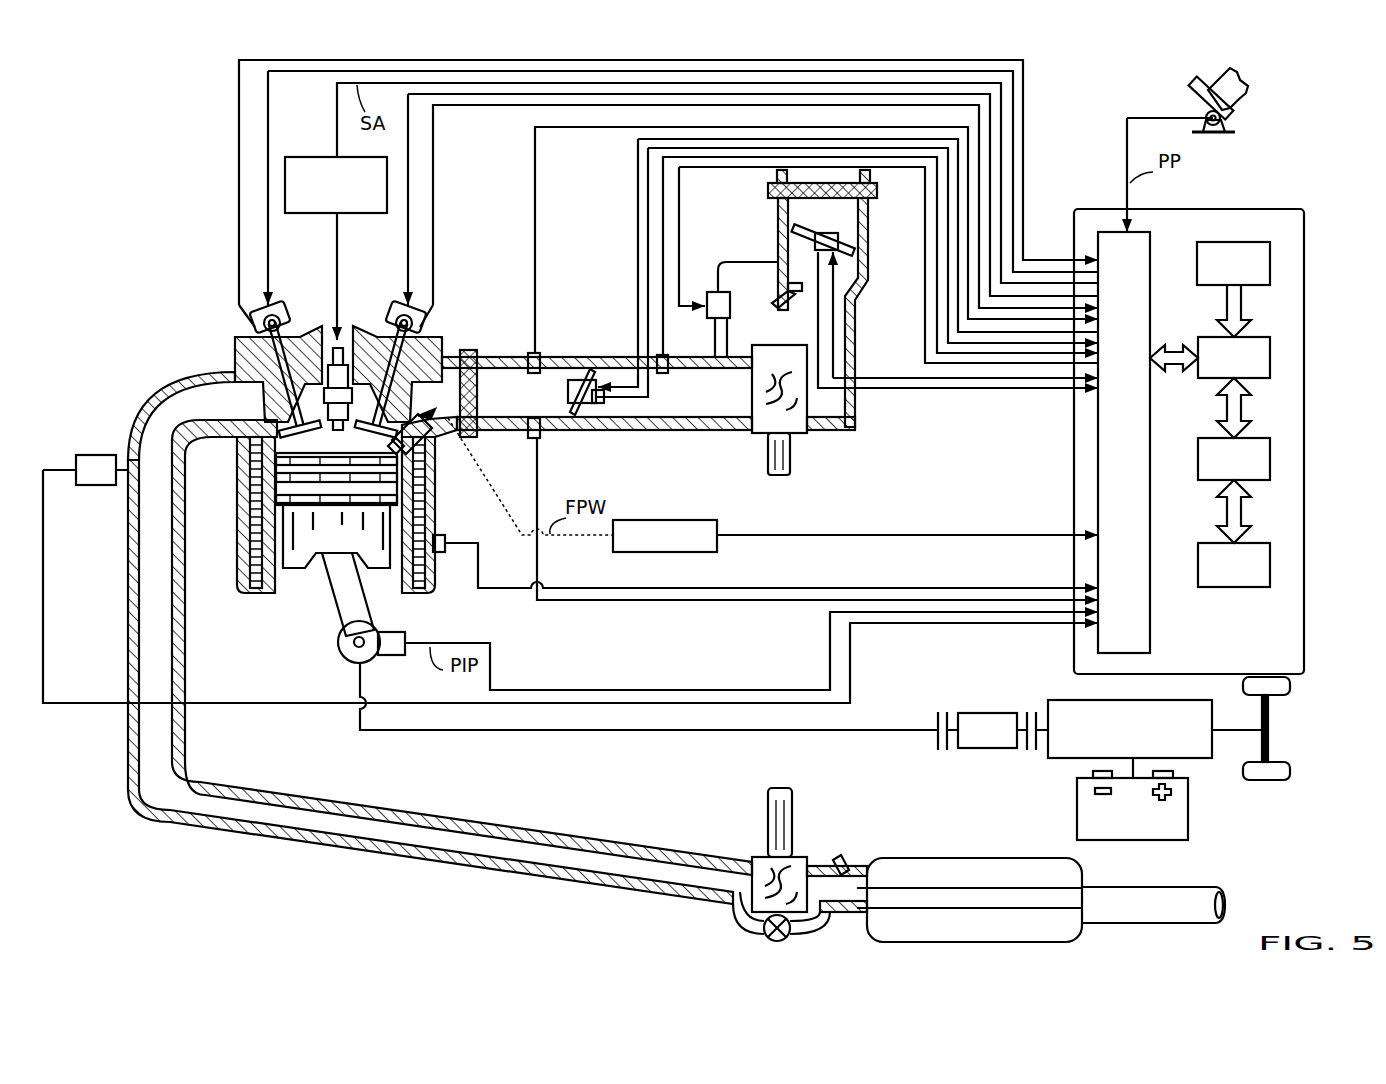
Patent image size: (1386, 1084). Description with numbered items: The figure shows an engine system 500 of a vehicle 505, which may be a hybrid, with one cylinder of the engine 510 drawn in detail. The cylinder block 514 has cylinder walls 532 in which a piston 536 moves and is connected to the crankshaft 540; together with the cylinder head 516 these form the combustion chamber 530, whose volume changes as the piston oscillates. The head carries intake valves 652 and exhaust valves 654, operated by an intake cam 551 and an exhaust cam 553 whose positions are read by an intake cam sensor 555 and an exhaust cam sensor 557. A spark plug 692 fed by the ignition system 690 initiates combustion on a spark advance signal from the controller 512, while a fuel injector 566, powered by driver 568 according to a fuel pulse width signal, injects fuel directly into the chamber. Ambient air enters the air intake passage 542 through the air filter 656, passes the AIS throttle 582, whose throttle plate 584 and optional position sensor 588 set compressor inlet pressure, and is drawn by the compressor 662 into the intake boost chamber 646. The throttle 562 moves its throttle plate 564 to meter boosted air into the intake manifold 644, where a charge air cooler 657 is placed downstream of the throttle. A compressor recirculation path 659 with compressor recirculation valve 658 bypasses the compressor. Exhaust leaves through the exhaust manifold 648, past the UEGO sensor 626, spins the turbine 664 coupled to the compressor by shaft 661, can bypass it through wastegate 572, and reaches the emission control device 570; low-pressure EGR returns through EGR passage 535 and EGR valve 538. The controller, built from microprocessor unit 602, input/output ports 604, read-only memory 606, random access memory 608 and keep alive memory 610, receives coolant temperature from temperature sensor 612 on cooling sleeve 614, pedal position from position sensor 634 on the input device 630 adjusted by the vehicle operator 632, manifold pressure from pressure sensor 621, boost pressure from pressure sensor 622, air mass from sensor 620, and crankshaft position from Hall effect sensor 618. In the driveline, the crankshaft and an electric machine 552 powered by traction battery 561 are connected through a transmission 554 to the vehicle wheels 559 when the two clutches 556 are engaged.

The engine system 500 is at (92, 118).
The vehicle 505 is at (1303, 707).
The engine 510 is at (165, 270).
The controller 512 is at (1292, 210).
The cylinder block 514 is at (226, 488).
The cylinder head 516 is at (450, 340).
The combustion chamber 530 is at (241, 541).
The cylinder walls 532 is at (273, 578).
The EGR passage 535 is at (775, 305).
The piston 536 is at (320, 542).
The EGR valve 538 is at (786, 286).
The crankshaft 540 is at (350, 663).
The air intake passage 542 is at (846, 223).
The intake cam 551 is at (396, 310).
The electric machine 552 is at (986, 750).
The exhaust cam 553 is at (280, 308).
The transmission 554 is at (1190, 758).
The intake cam sensor 555 is at (421, 326).
The clutch 556 is at (936, 716).
The exhaust cam sensor 557 is at (256, 326).
The vehicle wheels 559 is at (1270, 781).
The traction battery 561 is at (1140, 841).
The throttle 562 is at (575, 368).
The throttle plate 564 is at (592, 382).
The fuel injector 566 is at (433, 446).
The driver 568 is at (695, 520).
The emission control device 570 is at (869, 931).
The wastegate 572 is at (765, 929).
The air intake system throttle 582 is at (793, 229).
The throttle plate 584 is at (790, 228).
The position sensor 588 is at (793, 242).
The microprocessor unit 602 is at (1271, 357).
The input/output ports 604 is at (1153, 240).
The read-only memory 606 is at (1271, 262).
The random access memory 608 is at (1271, 455).
The keep alive memory 610 is at (1271, 560).
The temperature sensor 612 is at (462, 525).
The cooling sleeve 614 is at (437, 574).
The Hall effect sensor 618 is at (386, 656).
The air mass sensor 620 is at (541, 437).
The pressure sensor 621 is at (534, 353).
The pressure sensor 622 is at (662, 355).
The UEGO sensor 626 is at (75, 458).
The input device 630 is at (1191, 96).
The vehicle operator 632 is at (1247, 82).
The position sensor 634 is at (1227, 121).
The intake manifold 644 is at (526, 406).
The intake boost chamber 646 is at (689, 406).
The exhaust manifold 648 is at (221, 411).
The intake valves 652 is at (380, 418).
The exhaust valves 654 is at (233, 372).
The air filter 656 is at (877, 192).
The charge air cooler 657 is at (478, 437).
The compressor recirculation valve 658 is at (708, 298).
The compressor recirculation path 659 is at (728, 345).
The shaft 661 is at (792, 467).
The compressor 662 is at (807, 433).
The turbine 664 is at (755, 858).
The ignition system 690 is at (319, 157).
The spark plug 692 is at (344, 318).